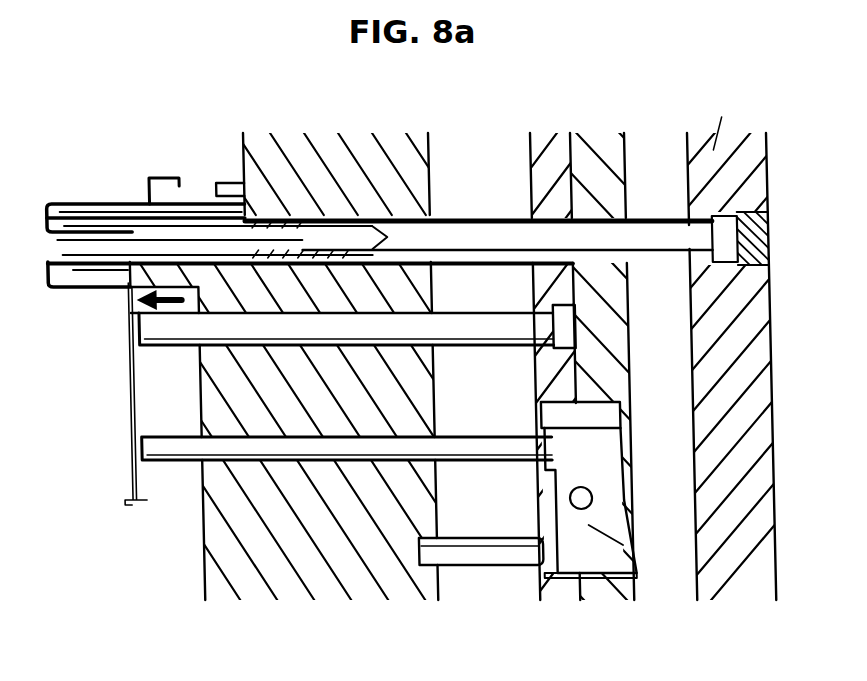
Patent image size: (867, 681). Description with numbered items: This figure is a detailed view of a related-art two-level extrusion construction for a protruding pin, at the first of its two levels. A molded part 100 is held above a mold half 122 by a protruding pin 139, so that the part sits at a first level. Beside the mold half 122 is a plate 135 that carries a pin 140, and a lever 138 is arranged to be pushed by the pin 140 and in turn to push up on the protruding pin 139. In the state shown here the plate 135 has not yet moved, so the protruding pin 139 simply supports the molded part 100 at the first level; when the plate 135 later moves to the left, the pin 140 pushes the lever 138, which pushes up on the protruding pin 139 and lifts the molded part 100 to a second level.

The molded part 100 is at (122, 395).
The mold half 122 is at (365, 145).
The plate 135 is at (587, 121).
The lever 138 is at (709, 345).
The protruding pin 139 is at (159, 447).
The pin 140 is at (485, 547).